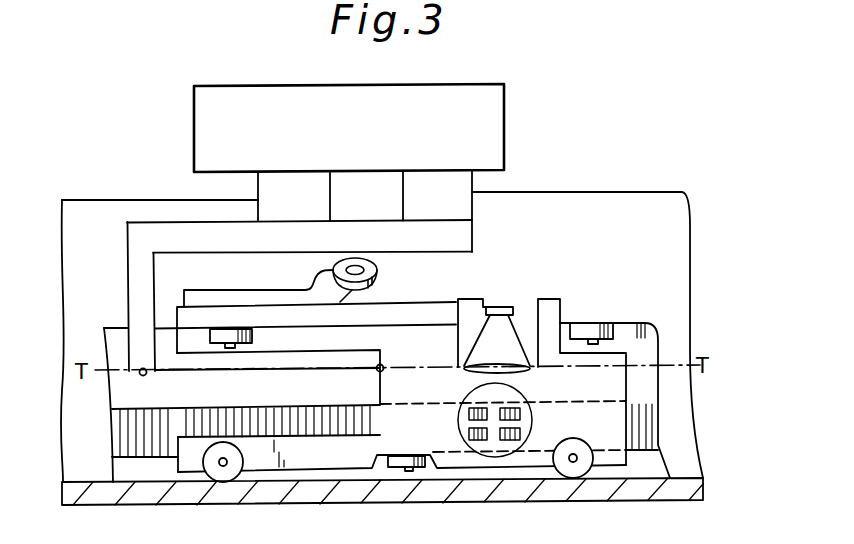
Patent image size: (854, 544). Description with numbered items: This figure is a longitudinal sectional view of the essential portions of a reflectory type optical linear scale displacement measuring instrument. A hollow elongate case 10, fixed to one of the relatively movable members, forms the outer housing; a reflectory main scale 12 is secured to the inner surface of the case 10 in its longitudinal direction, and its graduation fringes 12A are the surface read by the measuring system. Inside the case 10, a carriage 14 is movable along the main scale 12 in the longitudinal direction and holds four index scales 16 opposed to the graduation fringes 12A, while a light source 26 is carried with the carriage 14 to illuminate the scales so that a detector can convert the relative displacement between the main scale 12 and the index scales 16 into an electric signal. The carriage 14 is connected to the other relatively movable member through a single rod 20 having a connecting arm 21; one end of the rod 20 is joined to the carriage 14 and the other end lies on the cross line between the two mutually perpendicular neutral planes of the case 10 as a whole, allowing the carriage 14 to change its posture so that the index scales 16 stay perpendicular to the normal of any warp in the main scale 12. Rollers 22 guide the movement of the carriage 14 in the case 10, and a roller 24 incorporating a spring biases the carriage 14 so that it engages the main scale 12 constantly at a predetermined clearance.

The hollow elongate case 10 is at (436, 484).
The reflectory main scale 12 is at (118, 326).
The graduation fringes 12A is at (155, 416).
The carriage 14 is at (548, 298).
The index scales 16 is at (488, 401).
The single rod 20 is at (253, 372).
The connecting arm 21 is at (474, 188).
The rollers 22 is at (223, 329).
The roller incorporating a spring 24 is at (378, 269).
The light source 26 is at (500, 307).